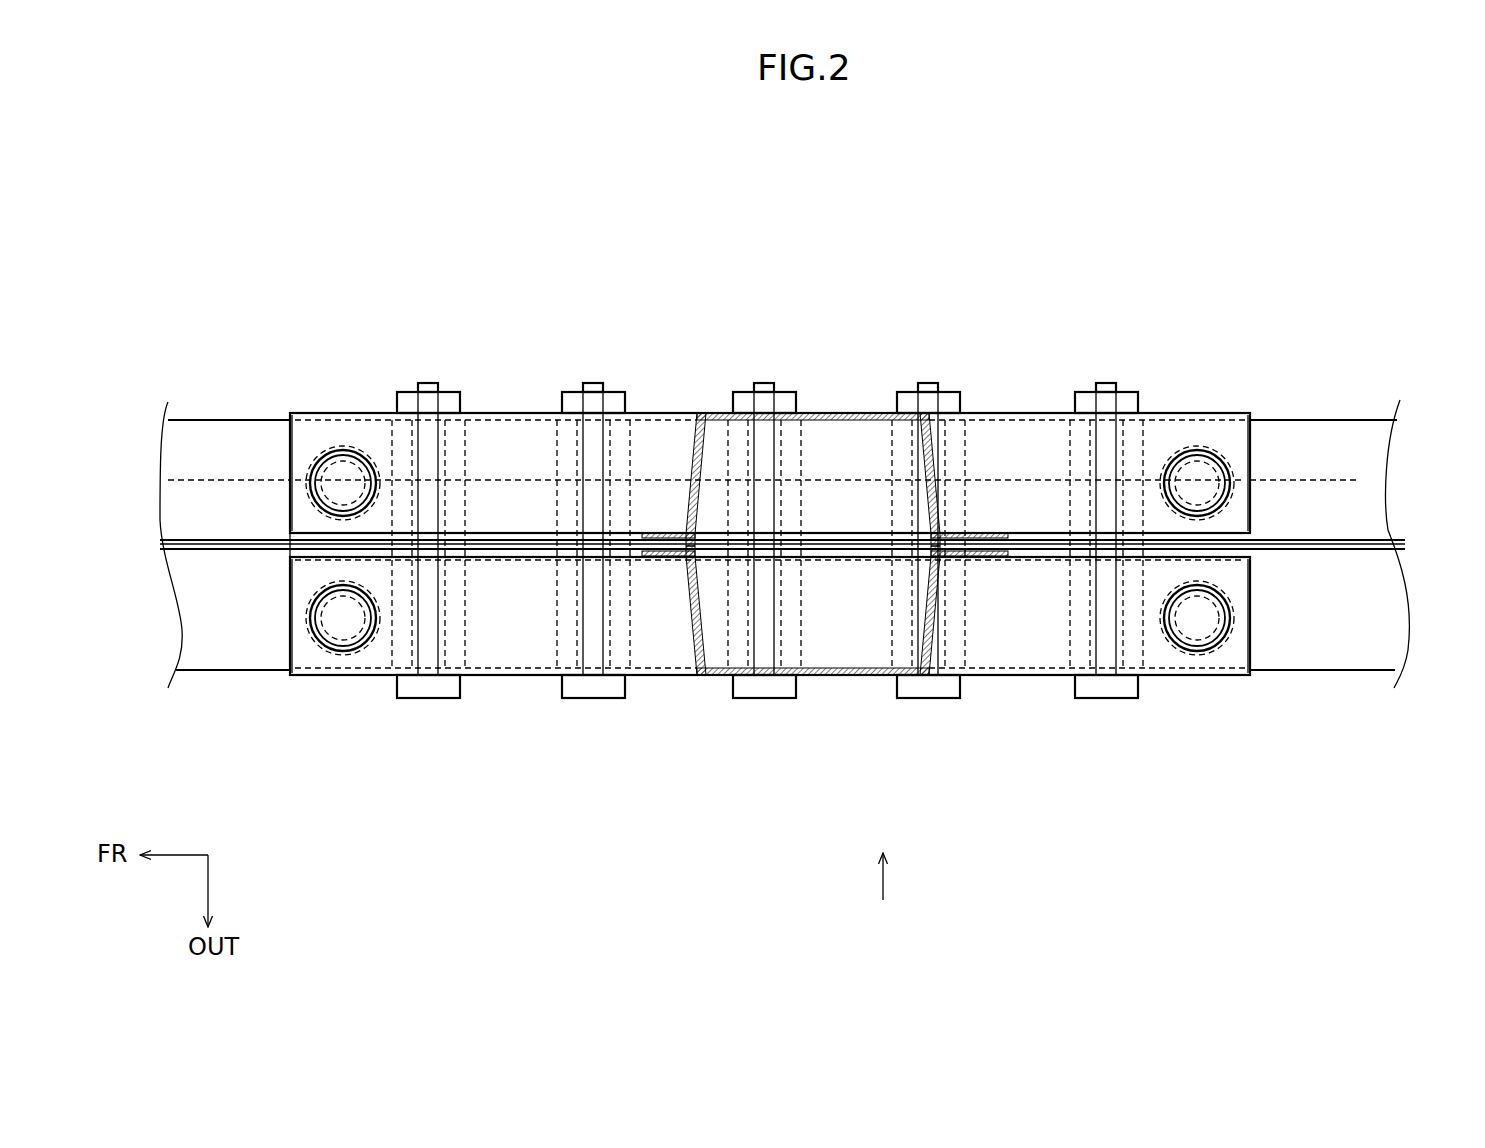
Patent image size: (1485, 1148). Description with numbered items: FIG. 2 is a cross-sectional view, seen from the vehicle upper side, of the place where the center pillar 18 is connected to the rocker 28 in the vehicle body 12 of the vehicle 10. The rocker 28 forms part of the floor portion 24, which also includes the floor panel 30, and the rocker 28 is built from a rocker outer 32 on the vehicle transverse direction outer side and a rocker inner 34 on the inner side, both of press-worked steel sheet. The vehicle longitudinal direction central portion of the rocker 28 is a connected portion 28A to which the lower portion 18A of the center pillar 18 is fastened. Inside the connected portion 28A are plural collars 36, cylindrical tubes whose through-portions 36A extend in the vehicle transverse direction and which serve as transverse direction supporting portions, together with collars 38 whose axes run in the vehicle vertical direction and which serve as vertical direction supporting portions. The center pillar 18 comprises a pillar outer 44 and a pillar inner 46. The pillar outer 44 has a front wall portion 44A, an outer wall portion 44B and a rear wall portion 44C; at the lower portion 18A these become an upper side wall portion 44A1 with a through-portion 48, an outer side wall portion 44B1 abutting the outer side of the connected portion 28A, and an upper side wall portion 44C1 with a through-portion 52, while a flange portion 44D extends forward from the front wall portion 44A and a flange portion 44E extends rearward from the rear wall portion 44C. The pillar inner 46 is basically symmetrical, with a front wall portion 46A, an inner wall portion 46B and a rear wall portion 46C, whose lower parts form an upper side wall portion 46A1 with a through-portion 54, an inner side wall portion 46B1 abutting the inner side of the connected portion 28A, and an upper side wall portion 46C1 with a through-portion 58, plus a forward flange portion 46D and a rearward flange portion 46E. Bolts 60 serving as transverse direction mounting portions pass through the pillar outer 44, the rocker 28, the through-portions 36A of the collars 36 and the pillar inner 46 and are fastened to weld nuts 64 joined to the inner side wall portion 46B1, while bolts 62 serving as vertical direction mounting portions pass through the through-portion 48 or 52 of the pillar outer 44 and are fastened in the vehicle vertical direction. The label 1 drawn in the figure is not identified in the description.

The vehicle 1 is at (883, 882).
The vehicle 10 is at (1088, 232).
The vehicle body 12 is at (1088, 232).
The center pillar 18 is at (844, 333).
The lower portion 18A is at (502, 640).
The floor portion 24 is at (1310, 766).
The rocker 28 is at (1366, 687).
The connected portion 28A is at (1163, 678).
The floor panel 30 is at (1372, 478).
The rocker outer 32 is at (1382, 617).
The rocker inner 34 is at (1378, 520).
The collar 36 is at (392, 648).
The through-portion 36A is at (446, 588).
The collar 38 is at (310, 503).
The pillar outer 44 is at (843, 703).
The front wall portion 44A is at (688, 629).
The upper side wall portion 44A1 is at (296, 585).
The outer wall portion 44B is at (817, 680).
The outer side wall portion 44B1 is at (1222, 677).
The rear wall portion 44C is at (936, 617).
The upper side wall portion 44C1 is at (1238, 572).
The flange portion 44D is at (655, 556).
The flange portion 44E is at (985, 556).
The pillar inner 46 is at (836, 398).
The front wall portion 46A is at (690, 438).
The upper side wall portion 46A1 is at (307, 435).
The inner wall portion 46B is at (866, 410).
The inner side wall portion 46B1 is at (1187, 412).
The rear wall portion 46C is at (936, 452).
The upper side wall portion 46C1 is at (1238, 433).
The flange portion 46D is at (657, 536).
The flange portion 46E is at (975, 536).
The through-portion 48 is at (345, 600).
The through-portion 52 is at (1199, 600).
The through-portion 54 is at (345, 465).
The through-portion 58 is at (1199, 465).
The bolt 60 is at (427, 689).
The bolt 62 is at (368, 494).
The weld nut 64 is at (408, 398).